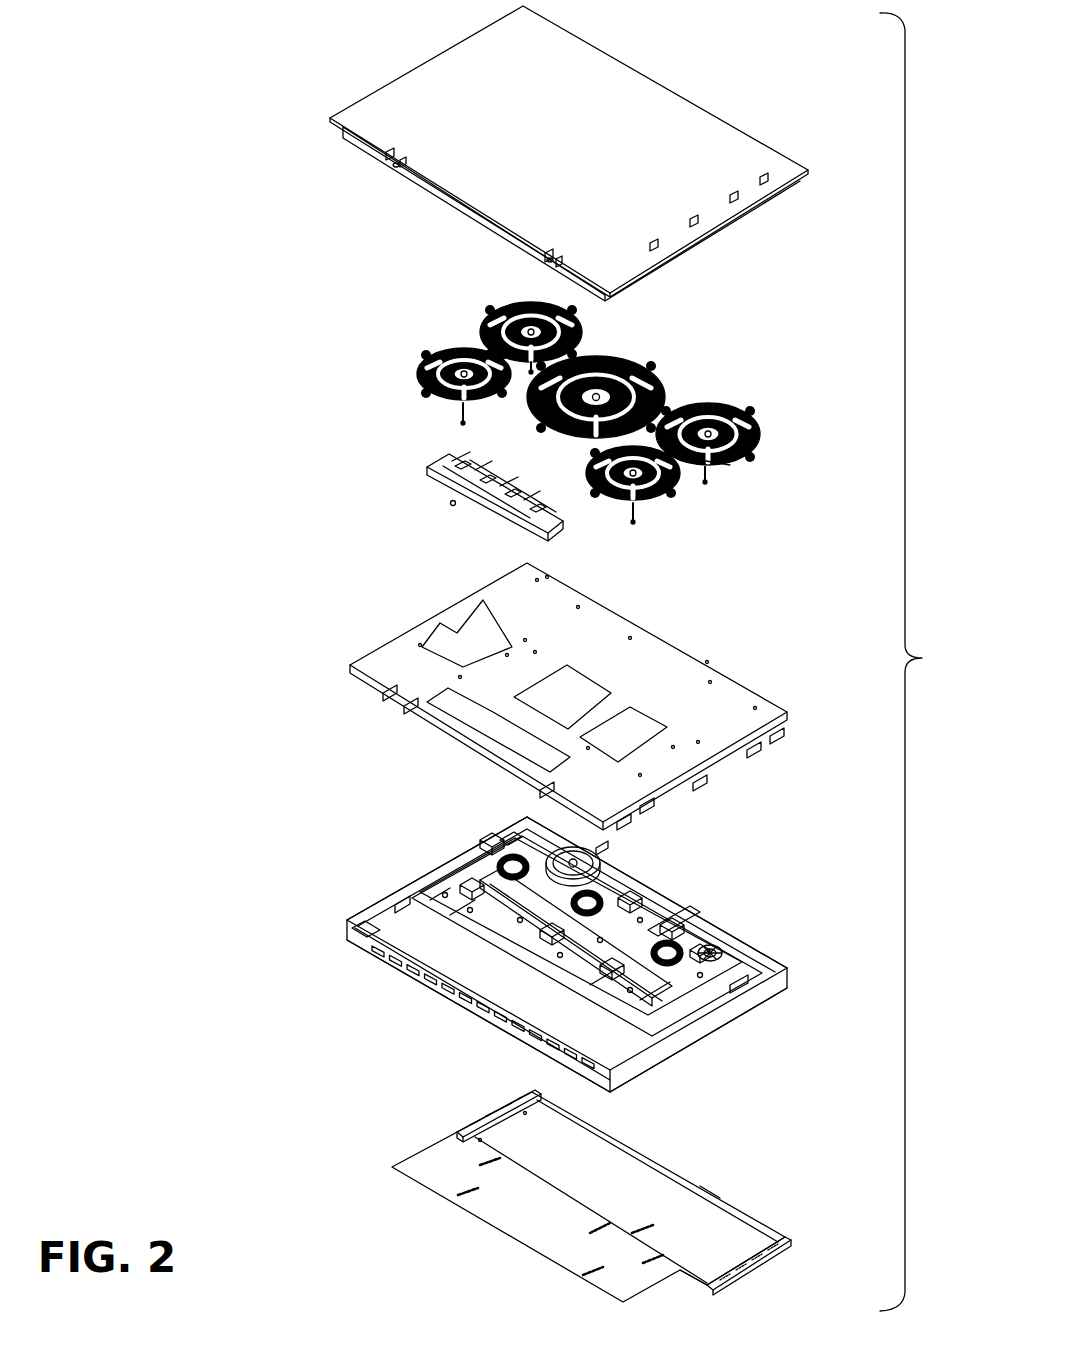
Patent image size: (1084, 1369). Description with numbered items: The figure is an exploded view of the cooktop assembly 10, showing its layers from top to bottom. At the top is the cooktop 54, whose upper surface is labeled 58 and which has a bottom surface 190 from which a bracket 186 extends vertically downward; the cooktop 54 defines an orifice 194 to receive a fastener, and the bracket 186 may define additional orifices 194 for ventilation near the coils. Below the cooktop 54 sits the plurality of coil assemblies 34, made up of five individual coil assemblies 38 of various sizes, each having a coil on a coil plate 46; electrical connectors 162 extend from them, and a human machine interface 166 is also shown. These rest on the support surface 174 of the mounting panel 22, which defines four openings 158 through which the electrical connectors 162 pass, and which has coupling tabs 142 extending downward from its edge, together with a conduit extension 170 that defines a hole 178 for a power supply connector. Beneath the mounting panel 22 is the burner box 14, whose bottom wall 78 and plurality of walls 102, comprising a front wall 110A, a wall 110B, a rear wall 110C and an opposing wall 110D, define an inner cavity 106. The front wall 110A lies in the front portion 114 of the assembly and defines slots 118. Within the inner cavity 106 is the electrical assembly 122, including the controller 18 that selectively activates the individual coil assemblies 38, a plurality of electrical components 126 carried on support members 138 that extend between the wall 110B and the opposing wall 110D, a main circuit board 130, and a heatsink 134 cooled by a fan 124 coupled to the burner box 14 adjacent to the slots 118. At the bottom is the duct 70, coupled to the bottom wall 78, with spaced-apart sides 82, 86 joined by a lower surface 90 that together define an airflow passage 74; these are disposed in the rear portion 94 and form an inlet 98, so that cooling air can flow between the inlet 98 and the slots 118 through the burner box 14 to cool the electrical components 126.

The cooktop assembly 10 is at (921, 662).
The burner box 14 is at (737, 982).
The controller 18 is at (670, 933).
The mounting panel 22 is at (570, 697).
The plurality of coil assemblies 34 is at (576, 422).
The individual coil assembly 38 is at (483, 318).
The coil plate 46 is at (708, 475).
The cooktop 54 is at (750, 135).
The cooking surface 58 is at (515, 197).
The duct 70 is at (587, 1209).
The airflow passage 74 is at (717, 1240).
The bottom wall 78 is at (390, 923).
The side 82 is at (490, 1112).
The side 86 is at (755, 1257).
The lower surface 90 is at (660, 1225).
The rear portion 94 is at (633, 1168).
The inlet 98 is at (710, 1197).
The plurality of walls 102 is at (555, 951).
The inner cavity 106 is at (470, 967).
The front wall 110A is at (357, 943).
The wall 110B is at (390, 898).
The rear wall 110C is at (600, 910).
The opposing wall 110D is at (680, 1040).
The front portion 114 is at (497, 1208).
The slots 118 is at (603, 857).
The electrical assembly 122 is at (733, 980).
The fan 124 is at (507, 843).
The electrical components 126 is at (448, 853).
The main circuit board 130 is at (582, 973).
The heatsink 134 is at (548, 902).
The support members 138 is at (403, 908).
The coupling tabs 142 is at (357, 682).
The openings 158 is at (460, 628).
The electrical connector 162 is at (725, 462).
The human machine interface 166 is at (447, 487).
The conduit extension 170 is at (703, 775).
The support surface 174 is at (513, 595).
The hole 178 is at (700, 780).
The bracket 186 is at (443, 200).
The bottom surface 190 is at (370, 142).
The orifice 194 is at (547, 253).